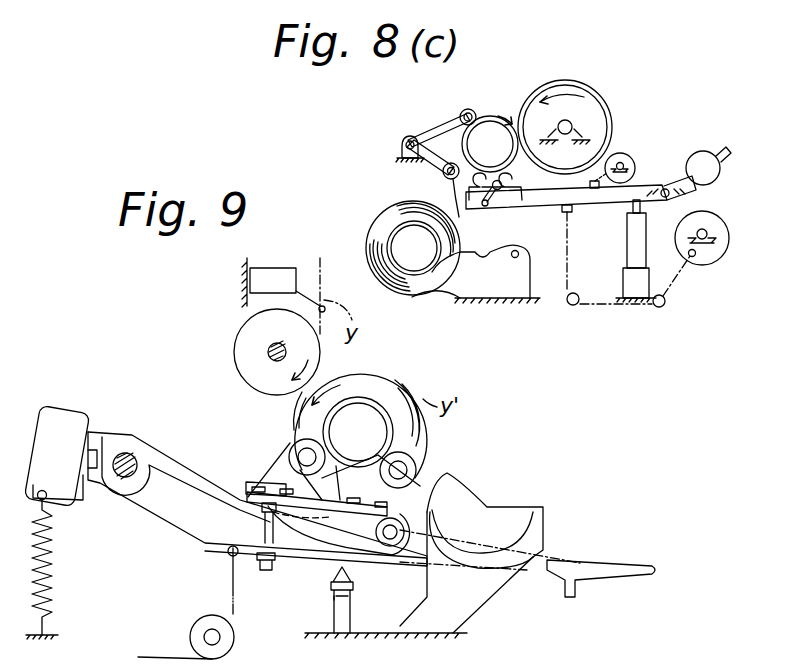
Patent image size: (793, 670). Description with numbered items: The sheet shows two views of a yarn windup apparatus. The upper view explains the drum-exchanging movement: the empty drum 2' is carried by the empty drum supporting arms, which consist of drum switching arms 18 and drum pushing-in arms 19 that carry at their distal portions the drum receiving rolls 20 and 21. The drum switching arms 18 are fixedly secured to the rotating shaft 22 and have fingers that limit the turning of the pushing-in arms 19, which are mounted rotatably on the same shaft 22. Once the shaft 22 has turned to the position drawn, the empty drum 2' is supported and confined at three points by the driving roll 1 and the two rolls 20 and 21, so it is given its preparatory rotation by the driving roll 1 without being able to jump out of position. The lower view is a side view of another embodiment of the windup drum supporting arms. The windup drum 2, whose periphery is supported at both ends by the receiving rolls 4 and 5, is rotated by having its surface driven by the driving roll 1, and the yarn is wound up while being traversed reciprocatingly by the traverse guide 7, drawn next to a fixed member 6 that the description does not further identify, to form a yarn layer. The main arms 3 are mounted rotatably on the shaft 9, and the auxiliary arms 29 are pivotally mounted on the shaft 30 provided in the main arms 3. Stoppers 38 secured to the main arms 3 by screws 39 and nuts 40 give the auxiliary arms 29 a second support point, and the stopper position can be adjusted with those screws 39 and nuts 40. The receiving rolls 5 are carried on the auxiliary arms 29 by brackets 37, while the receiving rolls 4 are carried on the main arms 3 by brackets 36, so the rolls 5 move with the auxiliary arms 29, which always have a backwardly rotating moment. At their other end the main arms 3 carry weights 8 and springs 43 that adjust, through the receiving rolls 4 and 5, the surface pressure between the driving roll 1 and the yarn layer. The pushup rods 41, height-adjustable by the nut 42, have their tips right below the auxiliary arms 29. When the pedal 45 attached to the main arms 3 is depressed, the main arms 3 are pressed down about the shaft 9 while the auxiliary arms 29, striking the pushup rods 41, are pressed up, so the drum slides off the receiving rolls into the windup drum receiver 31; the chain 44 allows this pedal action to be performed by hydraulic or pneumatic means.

In FIG. 8C, the driving roll 1 is at (578, 127).
In FIG. 9, the driving roll 1 is at (266, 352).
In FIG. 8C, the windup drum 2 is at (413, 236).
In FIG. 9, the windup drum 2 is at (360, 413).
In FIG. 8C, the empty drum 2' is at (490, 120).
In FIG. 8C, the main arms 3 is at (598, 200).
In FIG. 9, the main arms 3 is at (257, 499).
In FIG. 9, the receiving rolls 4 is at (415, 461).
In FIG. 9, the receiving rolls 5 is at (295, 440).
In FIG. 9, the fixed block 6 is at (266, 267).
In FIG. 9, the traverse guide 7 is at (303, 273).
In FIG. 9, the weights 8 is at (57, 439).
In FIG. 9, the shaft 9 is at (129, 445).
In FIG. 8C, the drum switching arms 18 is at (425, 164).
In FIG. 8C, the drum pushing-in arms 19 is at (439, 114).
In FIG. 8C, the drum receiving roll 20 is at (476, 261).
In FIG. 8C, the drum receiving roll 21 is at (463, 97).
In FIG. 8C, the rotating shaft 22 is at (401, 134).
In FIG. 9, the auxiliary arms 29 is at (328, 538).
In FIG. 9, the shaft 30 is at (395, 559).
In FIG. 8C, the windup drum receiver 31 is at (429, 248).
In FIG. 9, the windup drum receiver 31 is at (490, 521).
In FIG. 9, the brackets 36 is at (471, 549).
In FIG. 9, the brackets 37 is at (330, 465).
In FIG. 9, the stoppers 38 is at (251, 477).
In FIG. 9, the screws 39 is at (244, 523).
In FIG. 9, the nuts 40 is at (261, 585).
In FIG. 9, the pushup rods 41 is at (355, 600).
In FIG. 9, the nut 42 is at (311, 609).
In FIG. 9, the springs 43 is at (60, 569).
In FIG. 9, the chain 44 is at (186, 602).
In FIG. 9, the pedal 45 is at (601, 562).